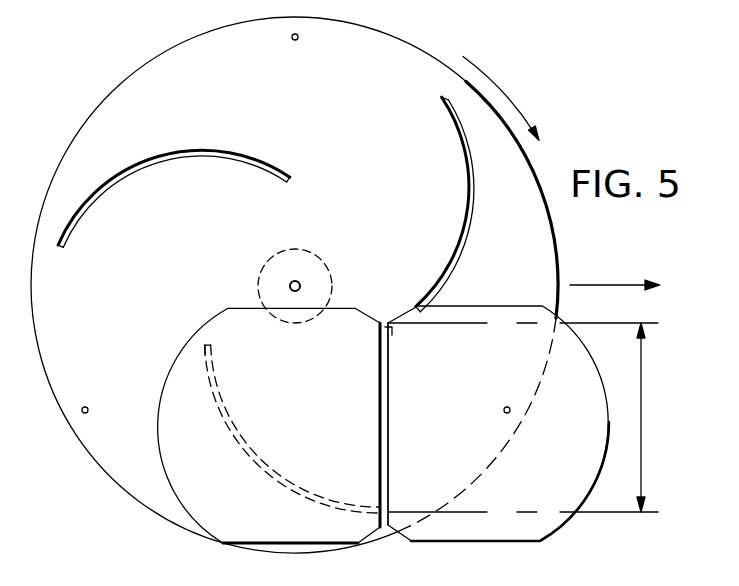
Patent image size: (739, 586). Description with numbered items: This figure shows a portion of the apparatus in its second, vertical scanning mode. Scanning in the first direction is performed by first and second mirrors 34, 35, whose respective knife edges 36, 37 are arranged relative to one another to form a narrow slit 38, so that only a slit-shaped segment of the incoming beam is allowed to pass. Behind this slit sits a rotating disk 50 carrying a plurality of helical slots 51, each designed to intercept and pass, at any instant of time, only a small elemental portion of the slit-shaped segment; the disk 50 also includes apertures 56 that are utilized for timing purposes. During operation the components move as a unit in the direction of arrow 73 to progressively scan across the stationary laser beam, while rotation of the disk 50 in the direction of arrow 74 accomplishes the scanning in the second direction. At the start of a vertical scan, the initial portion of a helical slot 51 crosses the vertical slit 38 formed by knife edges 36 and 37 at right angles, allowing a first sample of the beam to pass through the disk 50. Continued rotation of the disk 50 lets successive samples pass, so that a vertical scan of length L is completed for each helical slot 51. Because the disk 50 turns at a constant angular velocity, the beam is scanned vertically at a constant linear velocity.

The rotating disk 50 is at (136, 84).
The apertures 56 is at (292, 37).
The helical slots 51 is at (190, 150).
The arrow 74 is at (513, 107).
The arrow 73 is at (604, 285).
The first mirror 34 is at (193, 337).
The second mirror 35 is at (598, 373).
The knife edge 36 is at (378, 375).
The knife edge 37 is at (390, 356).
The narrow slit 38 is at (387, 421).
The length L is at (644, 436).